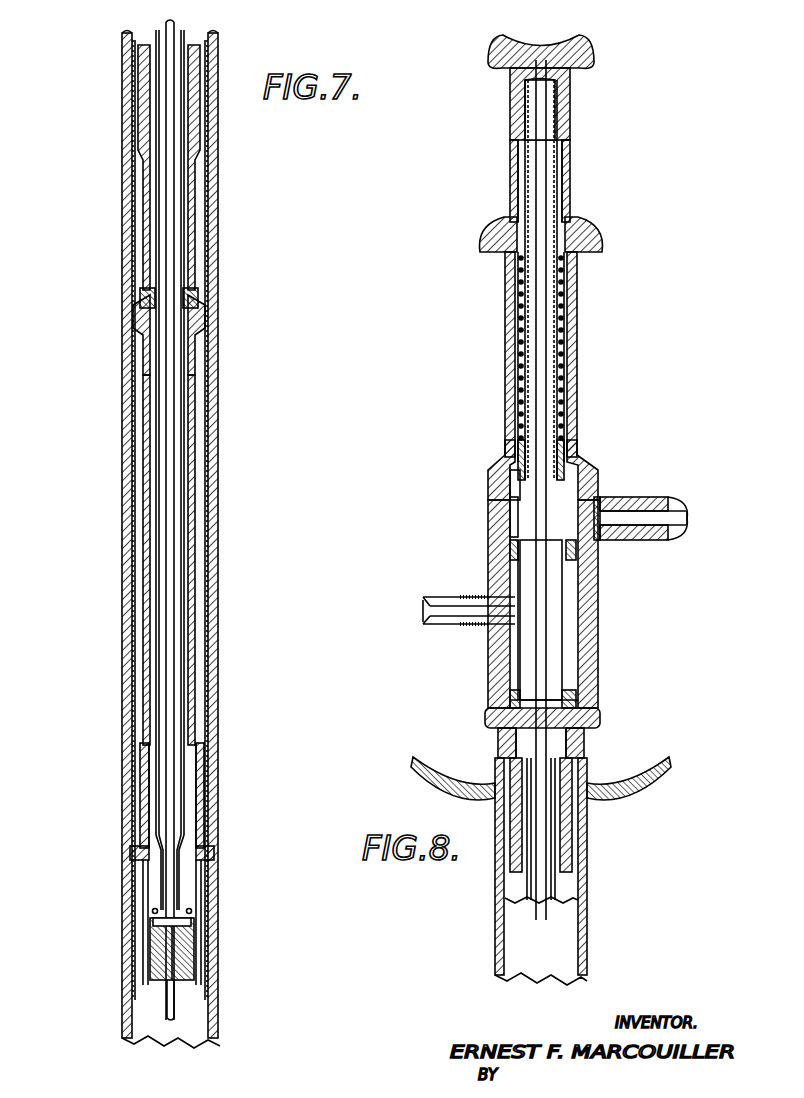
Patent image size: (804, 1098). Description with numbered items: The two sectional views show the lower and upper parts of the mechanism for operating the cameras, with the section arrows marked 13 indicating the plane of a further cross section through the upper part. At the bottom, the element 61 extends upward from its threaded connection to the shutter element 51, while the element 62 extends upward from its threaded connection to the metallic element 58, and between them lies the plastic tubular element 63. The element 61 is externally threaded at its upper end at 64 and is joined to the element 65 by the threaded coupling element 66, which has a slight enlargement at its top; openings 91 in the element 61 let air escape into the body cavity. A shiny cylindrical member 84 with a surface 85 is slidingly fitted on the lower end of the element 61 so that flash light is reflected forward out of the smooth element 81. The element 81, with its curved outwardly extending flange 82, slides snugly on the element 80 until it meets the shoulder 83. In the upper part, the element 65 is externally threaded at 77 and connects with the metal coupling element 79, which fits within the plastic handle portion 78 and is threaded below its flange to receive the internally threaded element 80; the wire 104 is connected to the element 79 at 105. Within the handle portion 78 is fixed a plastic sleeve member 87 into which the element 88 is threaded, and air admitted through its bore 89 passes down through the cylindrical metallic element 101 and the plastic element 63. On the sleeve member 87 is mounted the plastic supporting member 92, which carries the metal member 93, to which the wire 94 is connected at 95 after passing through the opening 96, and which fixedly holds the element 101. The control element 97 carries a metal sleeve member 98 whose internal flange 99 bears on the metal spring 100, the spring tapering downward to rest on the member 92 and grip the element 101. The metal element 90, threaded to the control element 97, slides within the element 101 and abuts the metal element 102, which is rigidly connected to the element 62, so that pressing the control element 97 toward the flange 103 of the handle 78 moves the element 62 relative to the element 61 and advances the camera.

In FIG. 8, the section line 13- 13 is at (426, 449).
In FIG. 7, the shutter element 51 is at (150, 960).
In FIG. 7, the metallic element 58 is at (176, 997).
In FIG. 7, the element 61 is at (196, 452).
In FIG. 7, the element 62 is at (165, 815).
In FIG. 8, the element 62 is at (533, 892).
In FIG. 7, the plastic tubular element 63 is at (150, 783).
In FIG. 8, the plastic tubular element 63 is at (562, 606).
In FIG. 7, the external thread 64 is at (148, 362).
In FIG. 7, the element 65 is at (143, 235).
In FIG. 8, the element 65 is at (566, 838).
In FIG. 7, the threaded coupling element 66 is at (136, 335).
In FIG. 8, the external thread 77 is at (602, 716).
In FIG. 8, the plastic handle portion 78 is at (598, 642).
In FIG. 8, the metal coupling element 79 is at (598, 700).
In FIG. 7, the element 80 is at (134, 153).
In FIG. 8, the element 80 is at (500, 745).
In FIG. 7, the element 81 is at (218, 195).
In FIG. 8, the element 81 is at (586, 880).
In FIG. 8, the curved outwardly extending flange 82 is at (655, 775).
In FIG. 8, the shoulder 83 is at (586, 762).
In FIG. 7, the cylindrical member 84 is at (140, 748).
In FIG. 7, the surface 85 is at (140, 872).
In FIG. 8, the sleeve member 87 is at (600, 495).
In FIG. 8, the element 88 is at (682, 506).
In FIG. 8, the bore 89 is at (690, 522).
In FIG. 8, the metal element 90 is at (572, 192).
In FIG. 7, the openings 91 is at (194, 915).
In FIG. 8, the plastic supporting member 92 is at (582, 465).
In FIG. 8, the metal member 93 is at (562, 440).
In FIG. 8, the wire 94 is at (420, 600).
In FIG. 8, the connection 95 is at (500, 482).
In FIG. 8, the opening 96 is at (512, 512).
In FIG. 8, the control element 97 is at (592, 40).
In FIG. 8, the metal sleeve member 98 is at (576, 255).
In FIG. 8, the flange 99 is at (512, 258).
In FIG. 8, the metal spring 100 is at (566, 377).
In FIG. 8, the cylindrical metallic element 101 is at (515, 368).
In FIG. 8, the metal element 102 is at (570, 85).
In FIG. 8, the flange 103 is at (492, 233).
In FIG. 8, the wire 104 is at (422, 614).
In FIG. 8, the connection 105 is at (498, 692).